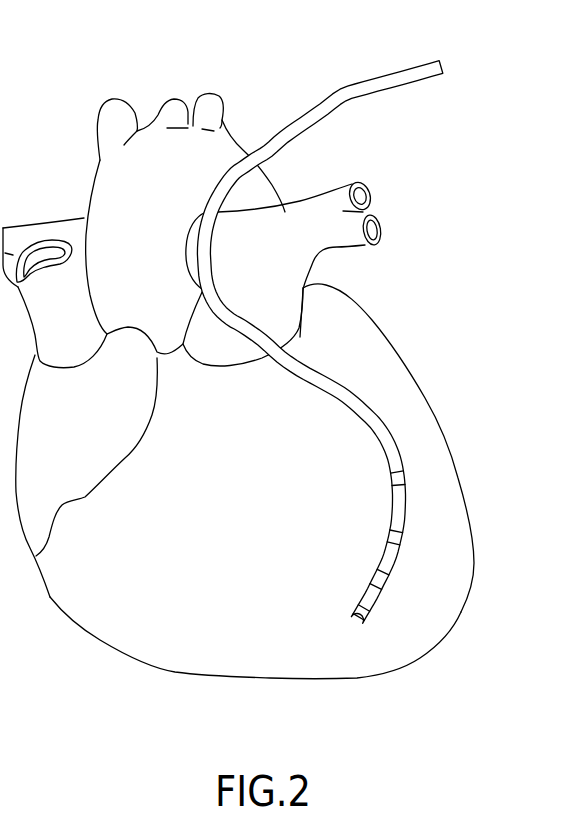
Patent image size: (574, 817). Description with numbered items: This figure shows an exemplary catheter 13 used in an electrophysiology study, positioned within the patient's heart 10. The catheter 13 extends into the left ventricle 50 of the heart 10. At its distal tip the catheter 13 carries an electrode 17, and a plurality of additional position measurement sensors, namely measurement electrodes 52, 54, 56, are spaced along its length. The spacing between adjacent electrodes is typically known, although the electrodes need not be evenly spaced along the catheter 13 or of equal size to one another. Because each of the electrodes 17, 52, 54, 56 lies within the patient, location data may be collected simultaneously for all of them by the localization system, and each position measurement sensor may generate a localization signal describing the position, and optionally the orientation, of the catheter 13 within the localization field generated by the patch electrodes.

The heart 10 is at (368, 317).
The catheter 13 is at (363, 96).
The electrode 17 is at (361, 624).
The left ventricle 50 is at (357, 678).
The position measurement sensor 52 is at (382, 583).
The position measurement sensor 54 is at (397, 537).
The position measurement sensor 56 is at (400, 474).